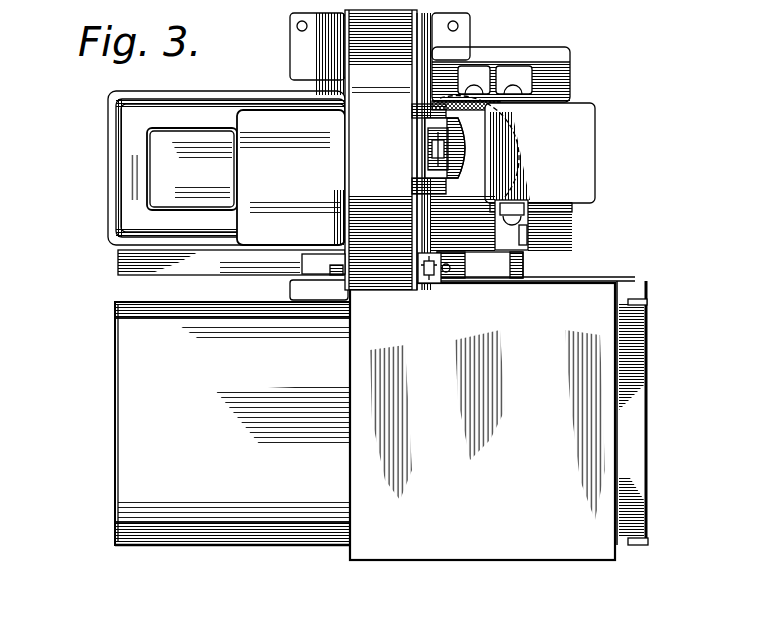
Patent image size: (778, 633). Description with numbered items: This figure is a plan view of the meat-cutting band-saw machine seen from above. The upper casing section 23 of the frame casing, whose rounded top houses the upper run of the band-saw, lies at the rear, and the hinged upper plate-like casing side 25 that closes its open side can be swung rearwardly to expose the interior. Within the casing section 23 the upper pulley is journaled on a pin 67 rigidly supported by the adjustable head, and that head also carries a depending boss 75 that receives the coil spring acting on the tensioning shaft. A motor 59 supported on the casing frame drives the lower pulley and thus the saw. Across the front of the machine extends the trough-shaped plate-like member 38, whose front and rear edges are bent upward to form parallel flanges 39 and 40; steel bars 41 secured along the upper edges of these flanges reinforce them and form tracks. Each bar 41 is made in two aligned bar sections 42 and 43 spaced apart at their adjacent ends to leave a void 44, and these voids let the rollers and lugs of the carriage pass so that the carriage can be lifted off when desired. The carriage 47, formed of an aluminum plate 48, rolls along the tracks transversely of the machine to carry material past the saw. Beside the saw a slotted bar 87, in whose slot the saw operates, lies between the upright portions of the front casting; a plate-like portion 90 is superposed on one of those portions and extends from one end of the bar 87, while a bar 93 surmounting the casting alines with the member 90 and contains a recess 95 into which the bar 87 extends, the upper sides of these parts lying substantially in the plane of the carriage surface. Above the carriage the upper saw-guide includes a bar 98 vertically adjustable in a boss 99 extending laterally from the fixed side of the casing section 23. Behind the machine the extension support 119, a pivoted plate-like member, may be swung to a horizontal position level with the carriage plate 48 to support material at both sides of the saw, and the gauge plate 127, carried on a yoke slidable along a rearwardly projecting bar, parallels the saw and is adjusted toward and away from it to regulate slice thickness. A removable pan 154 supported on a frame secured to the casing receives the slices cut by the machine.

The upper casing section 23 is at (378, 35).
The upper plate-like casing side section 25 is at (340, 35).
The trough-shaped plate-like member 38 is at (115, 447).
The front flange 39 is at (126, 541).
The rear flange 40 is at (136, 310).
The bar 41 is at (201, 302).
The bar section 42 is at (262, 302).
The bar section 43 is at (638, 302).
The void 44 is at (628, 303).
The carriage 47 is at (455, 550).
The carriage plate 48 is at (510, 550).
The motor 59 is at (545, 97).
The pin 67 is at (462, 190).
The depending boss 75 is at (455, 152).
The bar 87 is at (316, 270).
The plate-like portion 90 is at (135, 265).
The bar 93 is at (325, 260).
The recess 95 is at (522, 270).
The bar 98 is at (420, 280).
The boss 99 is at (437, 285).
The extension support 119 is at (291, 177).
The gauge plate 127 is at (577, 153).
The removable pan 154 is at (192, 169).